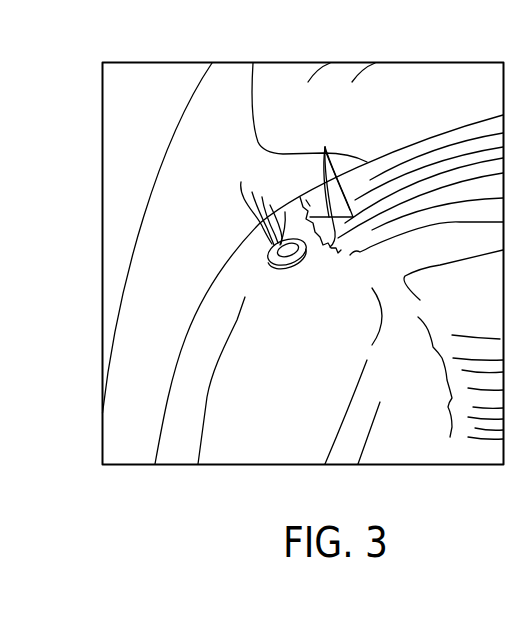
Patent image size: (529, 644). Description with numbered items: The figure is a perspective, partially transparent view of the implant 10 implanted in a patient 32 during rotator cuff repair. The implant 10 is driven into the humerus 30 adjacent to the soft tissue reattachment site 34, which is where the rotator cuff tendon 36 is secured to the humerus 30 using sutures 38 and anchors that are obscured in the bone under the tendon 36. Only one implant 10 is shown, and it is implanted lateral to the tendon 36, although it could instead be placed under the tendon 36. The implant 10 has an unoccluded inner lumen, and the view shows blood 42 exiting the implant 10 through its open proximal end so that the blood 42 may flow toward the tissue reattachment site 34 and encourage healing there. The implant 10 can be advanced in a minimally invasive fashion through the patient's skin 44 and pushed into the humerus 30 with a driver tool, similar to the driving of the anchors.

The implant 10 is at (267, 253).
The humerus 30 is at (213, 289).
The patient 32 is at (138, 117).
The soft tissue reattachment site 34 is at (340, 275).
The rotator cuff tendon 36 is at (392, 165).
The sutures 38 is at (331, 181).
The blood 42 is at (245, 162).
The skin 44 is at (167, 213).